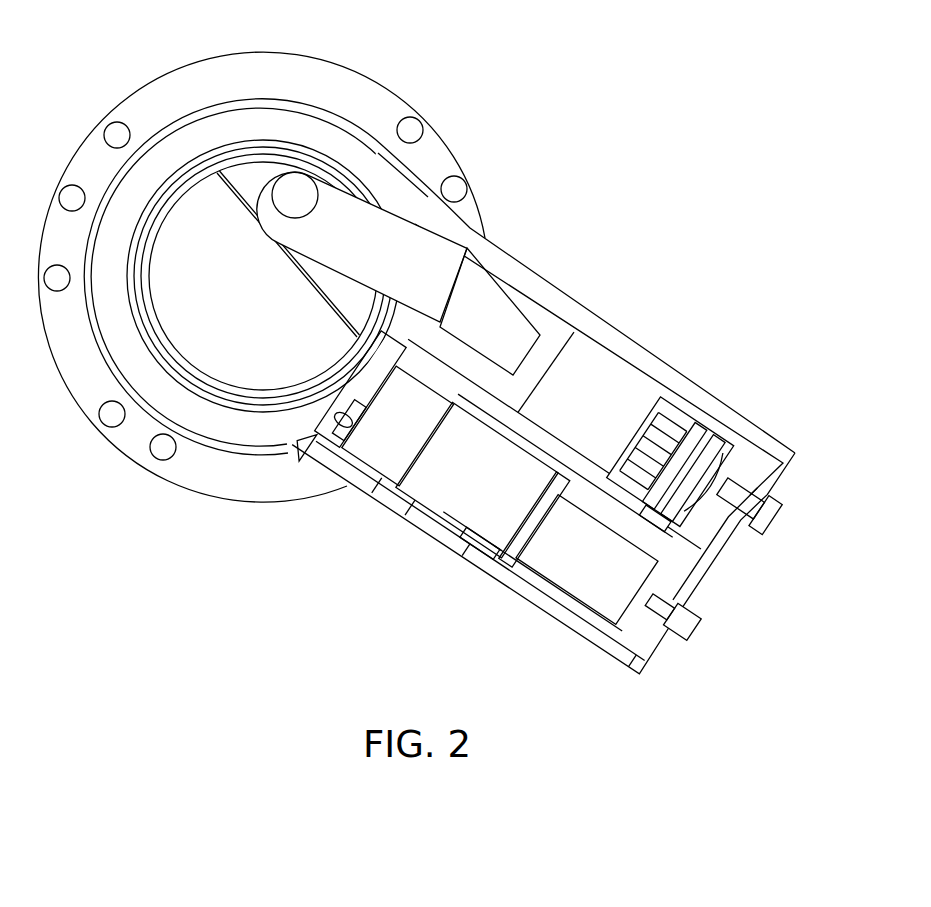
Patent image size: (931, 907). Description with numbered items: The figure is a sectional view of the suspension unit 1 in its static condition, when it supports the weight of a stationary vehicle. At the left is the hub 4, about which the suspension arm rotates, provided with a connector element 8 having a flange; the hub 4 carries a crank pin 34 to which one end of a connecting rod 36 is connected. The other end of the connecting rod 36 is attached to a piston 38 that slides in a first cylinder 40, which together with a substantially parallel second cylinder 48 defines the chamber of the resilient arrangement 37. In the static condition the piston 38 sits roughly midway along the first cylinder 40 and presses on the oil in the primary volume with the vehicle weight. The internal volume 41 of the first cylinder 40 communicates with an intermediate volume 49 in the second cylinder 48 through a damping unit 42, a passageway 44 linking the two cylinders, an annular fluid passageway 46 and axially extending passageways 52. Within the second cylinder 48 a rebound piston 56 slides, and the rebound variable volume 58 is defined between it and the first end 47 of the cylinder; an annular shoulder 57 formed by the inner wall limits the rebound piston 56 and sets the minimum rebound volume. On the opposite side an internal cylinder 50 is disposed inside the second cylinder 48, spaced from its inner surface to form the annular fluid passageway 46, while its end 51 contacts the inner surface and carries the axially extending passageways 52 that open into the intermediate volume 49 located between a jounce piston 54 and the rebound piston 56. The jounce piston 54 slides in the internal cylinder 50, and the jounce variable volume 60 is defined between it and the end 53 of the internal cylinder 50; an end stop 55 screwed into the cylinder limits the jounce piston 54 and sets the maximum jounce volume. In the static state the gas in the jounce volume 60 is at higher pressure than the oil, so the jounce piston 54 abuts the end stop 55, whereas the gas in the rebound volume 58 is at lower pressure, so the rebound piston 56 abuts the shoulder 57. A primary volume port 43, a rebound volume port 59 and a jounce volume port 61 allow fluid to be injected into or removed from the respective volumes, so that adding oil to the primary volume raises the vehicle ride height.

The suspension unit 1 is at (622, 78).
The hub 4 is at (205, 228).
The connector element 8 is at (372, 100).
The crank pin 34 is at (290, 188).
The connecting rod 36 is at (405, 255).
The resilient arrangement 37 is at (622, 350).
The piston 38 is at (555, 328).
The first cylinder 40 is at (655, 410).
The internal volume 41 is at (561, 375).
The damping unit 42 is at (640, 430).
The primary volume port 43 is at (755, 512).
The passageway 44 is at (672, 517).
The annular fluid passageway 46 is at (538, 580).
The first end 47 is at (352, 440).
The second cylinder 48 is at (458, 515).
The intermediate volume 49 is at (477, 479).
The internal cylinder 50 is at (578, 602).
The end 51 is at (530, 553).
The axially extending passageways 52 is at (495, 555).
The end 53 is at (620, 620).
The jounce piston 54 is at (520, 567).
The end stop 55 is at (555, 485).
The rebound piston 56 is at (420, 495).
The annular shoulder 57 is at (390, 490).
The rebound variable volume 58 is at (398, 426).
The rebound volume port 59 is at (300, 450).
The jounce variable volume 60 is at (587, 560).
The jounce volume port 61 is at (673, 628).